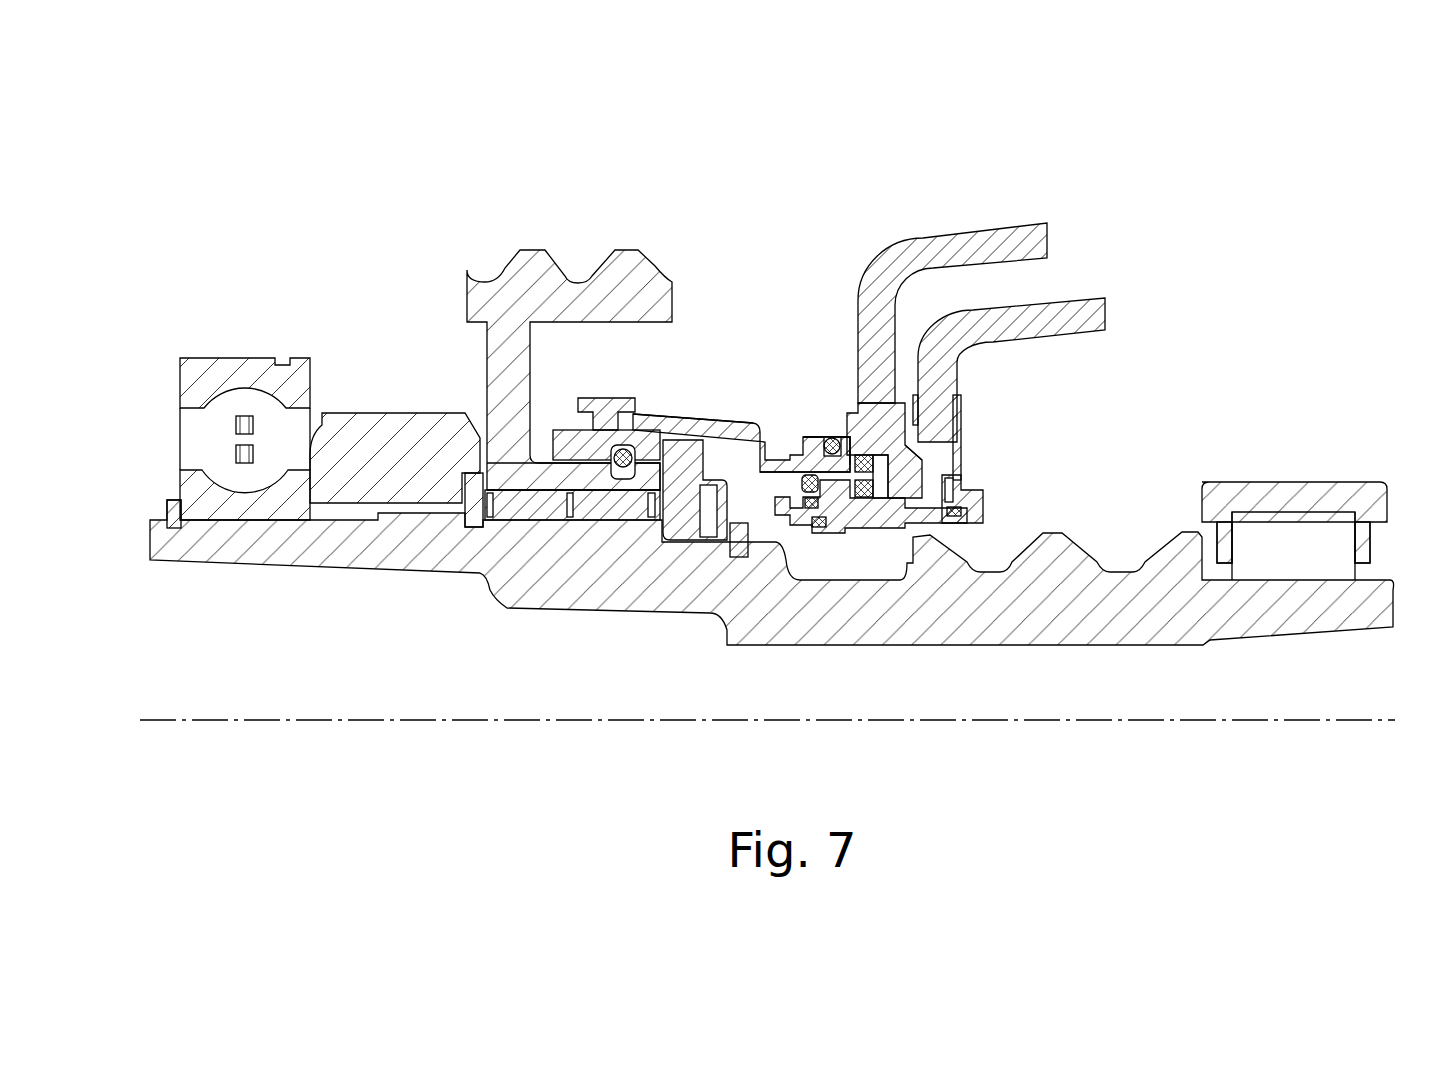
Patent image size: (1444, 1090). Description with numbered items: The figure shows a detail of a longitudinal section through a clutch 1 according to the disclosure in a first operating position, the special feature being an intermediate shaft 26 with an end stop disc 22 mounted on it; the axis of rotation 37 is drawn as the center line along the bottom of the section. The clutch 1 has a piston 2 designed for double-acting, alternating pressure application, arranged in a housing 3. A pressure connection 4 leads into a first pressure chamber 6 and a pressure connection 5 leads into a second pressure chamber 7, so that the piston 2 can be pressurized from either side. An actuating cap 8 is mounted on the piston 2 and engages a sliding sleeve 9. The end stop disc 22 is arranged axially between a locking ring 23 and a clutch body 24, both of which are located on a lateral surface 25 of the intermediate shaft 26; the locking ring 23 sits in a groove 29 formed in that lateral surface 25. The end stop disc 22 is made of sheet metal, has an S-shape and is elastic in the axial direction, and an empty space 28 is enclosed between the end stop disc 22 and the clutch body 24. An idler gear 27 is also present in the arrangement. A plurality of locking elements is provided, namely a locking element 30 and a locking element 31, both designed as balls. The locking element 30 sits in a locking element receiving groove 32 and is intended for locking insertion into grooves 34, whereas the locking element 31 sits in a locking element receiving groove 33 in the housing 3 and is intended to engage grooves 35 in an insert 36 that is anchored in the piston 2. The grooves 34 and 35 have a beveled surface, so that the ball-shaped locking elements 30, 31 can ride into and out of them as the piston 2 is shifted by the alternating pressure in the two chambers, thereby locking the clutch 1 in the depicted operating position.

The clutch 1 is at (1020, 108).
The piston 2 is at (780, 462).
The housing 3 is at (952, 452).
The pressure connection 4 is at (968, 232).
The pressure connection 5 is at (1045, 318).
The first pressure chamber 6 is at (978, 505).
The second pressure chamber 7 is at (845, 503).
The actuating cap 8 is at (718, 425).
The sliding sleeve 9 is at (567, 428).
The end stop disc 22 is at (707, 500).
The locking ring 23 is at (727, 548).
The clutch body 24 is at (652, 492).
The lateral surface 25 is at (797, 530).
The intermediate shaft 26 is at (938, 607).
The idler gear 27 is at (590, 290).
The empty space 28 is at (670, 492).
The groove 29 is at (744, 570).
The locking element 30 is at (700, 425).
The locking element 31 is at (840, 438).
The locking element receiving groove 32 is at (620, 496).
The locking element receiving groove 33 is at (826, 432).
The grooves 34 is at (583, 453).
The grooves 35 is at (832, 426).
The insert 36 is at (800, 472).
The axis of rotation 37 is at (1388, 718).